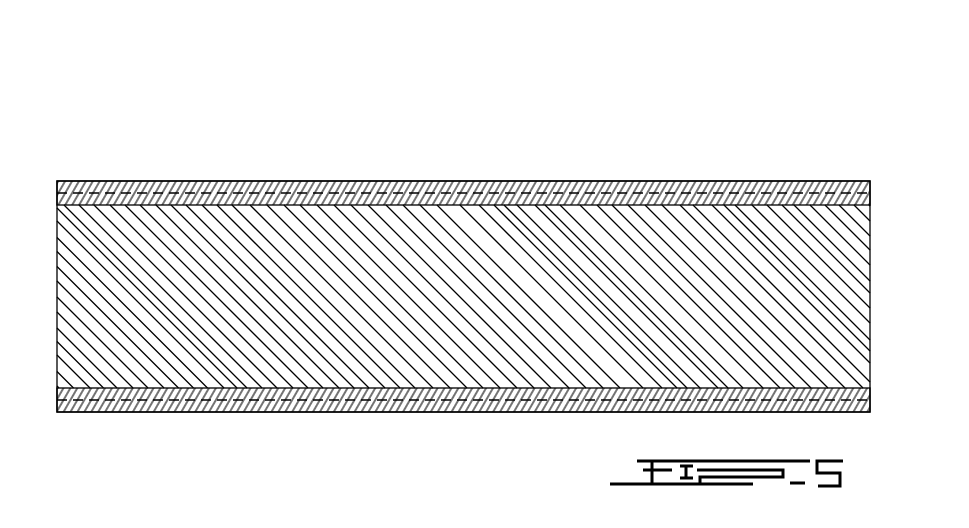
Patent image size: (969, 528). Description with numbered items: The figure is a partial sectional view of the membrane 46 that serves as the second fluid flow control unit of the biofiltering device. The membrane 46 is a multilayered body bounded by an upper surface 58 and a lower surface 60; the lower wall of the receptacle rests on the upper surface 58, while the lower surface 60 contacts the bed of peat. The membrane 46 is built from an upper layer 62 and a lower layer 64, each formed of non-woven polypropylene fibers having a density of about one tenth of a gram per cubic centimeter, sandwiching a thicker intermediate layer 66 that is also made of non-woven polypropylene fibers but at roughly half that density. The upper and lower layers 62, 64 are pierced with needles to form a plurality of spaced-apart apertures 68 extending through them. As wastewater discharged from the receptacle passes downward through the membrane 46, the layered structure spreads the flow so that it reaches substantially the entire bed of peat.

The membrane 46 is at (623, 183).
The upper surface 58 is at (792, 182).
The lower surface 60 is at (175, 412).
The upper layer 62 is at (395, 192).
The lower layer 64 is at (453, 413).
The intermediate layer 66 is at (800, 332).
The apertures 68 is at (143, 181).